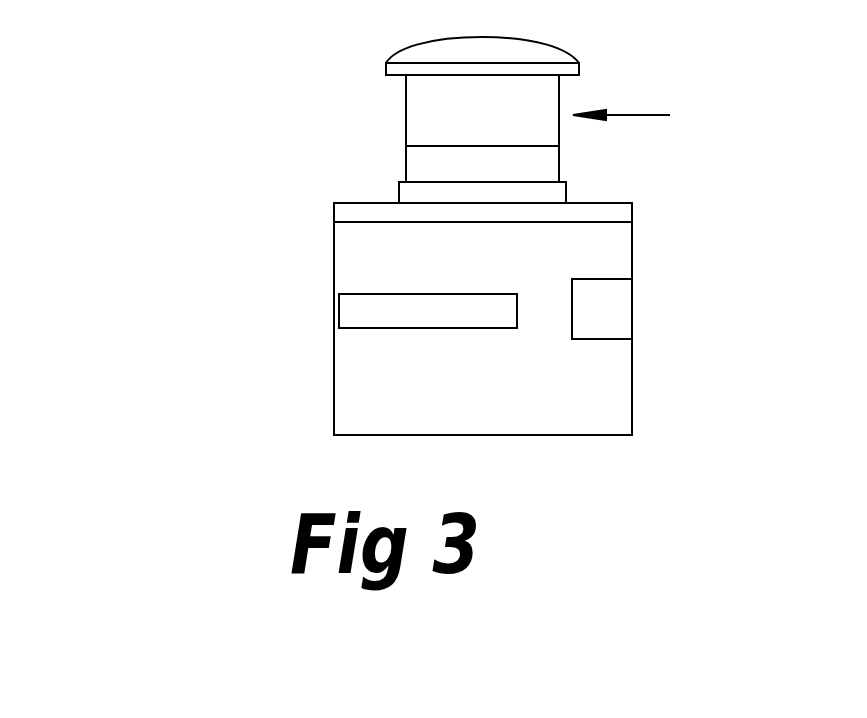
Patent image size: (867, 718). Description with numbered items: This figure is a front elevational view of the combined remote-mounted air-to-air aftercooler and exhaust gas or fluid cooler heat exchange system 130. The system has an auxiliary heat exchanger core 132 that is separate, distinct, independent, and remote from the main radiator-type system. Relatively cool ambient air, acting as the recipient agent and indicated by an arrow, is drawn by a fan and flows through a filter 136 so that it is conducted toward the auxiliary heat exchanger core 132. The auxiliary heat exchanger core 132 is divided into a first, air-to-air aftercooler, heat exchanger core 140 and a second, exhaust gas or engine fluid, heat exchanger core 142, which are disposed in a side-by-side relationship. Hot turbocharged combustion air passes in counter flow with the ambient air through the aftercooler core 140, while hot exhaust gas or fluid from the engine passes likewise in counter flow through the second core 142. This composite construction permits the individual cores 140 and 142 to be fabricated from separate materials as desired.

The combined remote-mounted air-to-air aftercooler and exhaust gas or fluid cooler h 130 is at (409, 226).
The auxiliary heat exchanger core 132 is at (632, 203).
The filter 136 is at (406, 113).
The first air-to-air aftercooler heat exchanger core 140 is at (388, 328).
The second exhaust gas or fluid heat exchanger core 142 is at (602, 339).